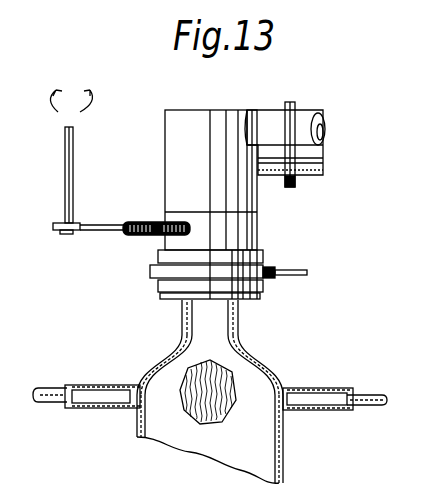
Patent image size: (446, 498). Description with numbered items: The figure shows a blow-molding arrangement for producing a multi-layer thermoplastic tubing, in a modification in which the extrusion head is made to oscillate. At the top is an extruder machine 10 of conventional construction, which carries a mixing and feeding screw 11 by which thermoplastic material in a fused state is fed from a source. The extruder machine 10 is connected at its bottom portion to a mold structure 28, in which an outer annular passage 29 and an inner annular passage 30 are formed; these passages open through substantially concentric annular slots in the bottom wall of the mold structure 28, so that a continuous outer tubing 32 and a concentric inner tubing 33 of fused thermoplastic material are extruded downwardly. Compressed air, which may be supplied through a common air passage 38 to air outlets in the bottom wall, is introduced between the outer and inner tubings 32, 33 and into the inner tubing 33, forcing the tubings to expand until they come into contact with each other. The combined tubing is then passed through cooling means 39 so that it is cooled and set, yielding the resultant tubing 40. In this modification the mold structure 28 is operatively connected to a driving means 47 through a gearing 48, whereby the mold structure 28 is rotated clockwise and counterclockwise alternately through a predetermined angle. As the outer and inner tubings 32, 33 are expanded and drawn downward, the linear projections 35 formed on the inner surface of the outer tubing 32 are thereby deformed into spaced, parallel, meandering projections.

The extruder machine 10 is at (205, 110).
The mixing and feeding screw 11 is at (300, 112).
The mold structure 28 is at (258, 223).
The outer annular passage 29 is at (180, 301).
The inner annular passage 30 is at (195, 302).
The outer tubing 32 is at (177, 345).
The inner tubing 33 is at (162, 371).
The linear projections 35 is at (242, 333).
The common air passage 38 is at (290, 268).
The cooling means 39 is at (316, 388).
The tubing 40 is at (135, 427).
The driving means 47 is at (73, 178).
The gearing 48 is at (152, 236).